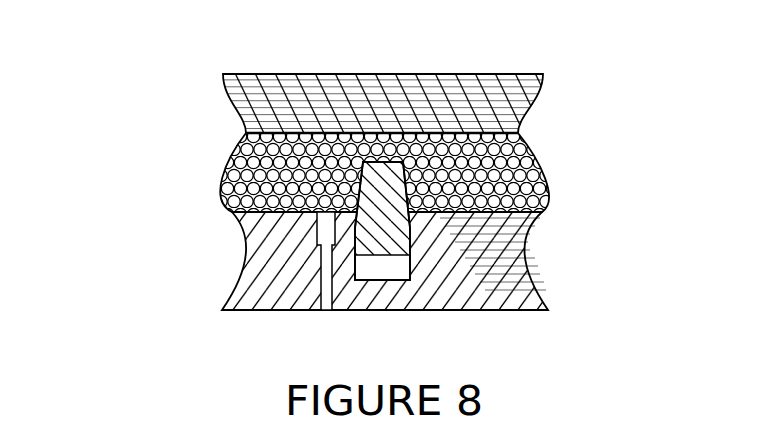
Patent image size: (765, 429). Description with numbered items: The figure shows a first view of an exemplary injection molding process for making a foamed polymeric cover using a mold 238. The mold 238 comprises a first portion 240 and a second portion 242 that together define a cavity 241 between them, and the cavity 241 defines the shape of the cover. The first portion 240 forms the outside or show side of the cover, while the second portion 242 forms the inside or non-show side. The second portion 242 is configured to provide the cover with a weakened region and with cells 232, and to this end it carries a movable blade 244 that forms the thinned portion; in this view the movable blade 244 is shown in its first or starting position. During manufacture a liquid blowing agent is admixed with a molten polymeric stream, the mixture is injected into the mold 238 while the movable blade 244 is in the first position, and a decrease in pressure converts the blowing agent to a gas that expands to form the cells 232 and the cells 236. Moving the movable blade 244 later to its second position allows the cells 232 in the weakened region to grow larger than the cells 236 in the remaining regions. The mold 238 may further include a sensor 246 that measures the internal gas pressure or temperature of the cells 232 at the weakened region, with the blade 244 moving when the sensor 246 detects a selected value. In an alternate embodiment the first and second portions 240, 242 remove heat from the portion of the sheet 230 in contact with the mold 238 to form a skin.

The mold 238 is at (350, 196).
The first portion 240 is at (525, 76).
The cells 232 is at (392, 132).
The sheet 230 is at (397, 172).
The cavity 241 is at (222, 168).
The cells 236 is at (548, 198).
The second portion 242 is at (518, 312).
The movable blade 244 is at (415, 228).
The sensor 246 is at (328, 223).